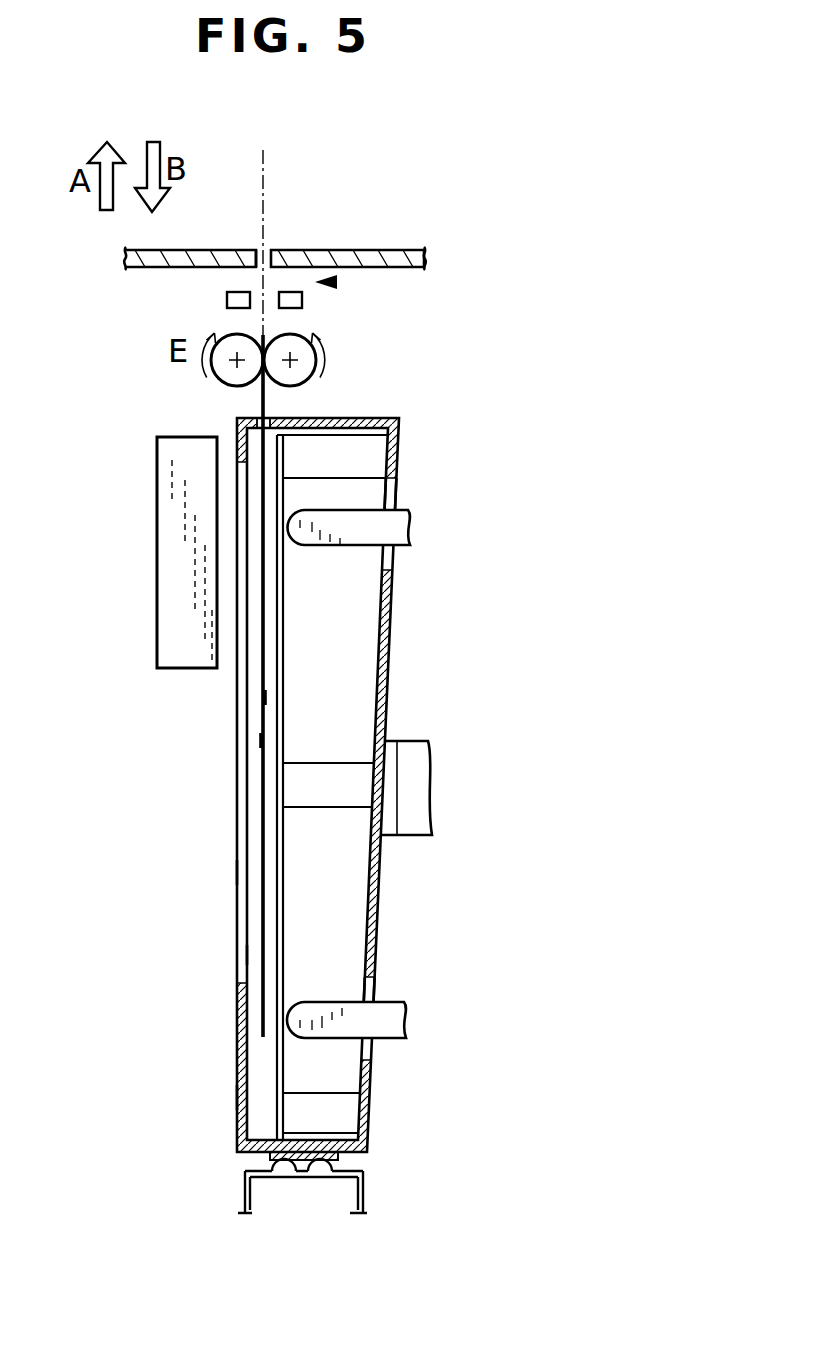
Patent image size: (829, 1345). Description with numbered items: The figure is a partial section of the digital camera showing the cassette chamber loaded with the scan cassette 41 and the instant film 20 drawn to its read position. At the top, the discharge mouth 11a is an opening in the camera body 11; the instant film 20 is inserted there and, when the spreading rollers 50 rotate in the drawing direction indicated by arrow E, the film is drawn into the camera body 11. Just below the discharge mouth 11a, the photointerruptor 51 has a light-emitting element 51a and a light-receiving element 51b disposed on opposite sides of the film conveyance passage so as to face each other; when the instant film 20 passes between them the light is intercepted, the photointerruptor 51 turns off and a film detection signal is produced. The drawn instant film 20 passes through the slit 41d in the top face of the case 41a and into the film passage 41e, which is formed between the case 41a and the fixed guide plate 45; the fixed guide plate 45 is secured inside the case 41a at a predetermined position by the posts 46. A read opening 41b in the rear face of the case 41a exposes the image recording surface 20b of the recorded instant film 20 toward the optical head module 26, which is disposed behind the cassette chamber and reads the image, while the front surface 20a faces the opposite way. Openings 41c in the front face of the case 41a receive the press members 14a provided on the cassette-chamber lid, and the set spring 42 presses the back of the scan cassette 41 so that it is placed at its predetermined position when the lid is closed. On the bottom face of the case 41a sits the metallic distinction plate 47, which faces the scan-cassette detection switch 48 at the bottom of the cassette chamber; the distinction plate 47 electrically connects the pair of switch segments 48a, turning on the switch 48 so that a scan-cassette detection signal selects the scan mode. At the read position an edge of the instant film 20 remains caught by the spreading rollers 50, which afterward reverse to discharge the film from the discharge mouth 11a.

The camera body 11 is at (400, 250).
The discharge mouth 11a is at (258, 248).
The instant film 20 is at (267, 208).
The front surface of paper 20a is at (265, 697).
The image recording surface 20b is at (261, 740).
The optical head module 26 is at (157, 570).
The scan cassette 41 is at (380, 898).
The case 41a is at (243, 1097).
The read opening 41b is at (242, 873).
The openings 41c is at (397, 490).
The slit 41d is at (258, 411).
The film passage 41e is at (252, 955).
The set spring 42 is at (415, 741).
The fixed guide plate 45 is at (287, 638).
The posts 46 is at (372, 457).
The distinction plate 47 is at (340, 1163).
The scan-cassette detection switch 48 is at (238, 1236).
The switch segments 48a is at (243, 1195).
The spreading rollers 50 is at (227, 384).
The photointerruptor 51 is at (337, 282).
The light-emitting element 51a is at (302, 300).
The light-receiving element 51b is at (227, 300).
The press member 14a is at (347, 545).